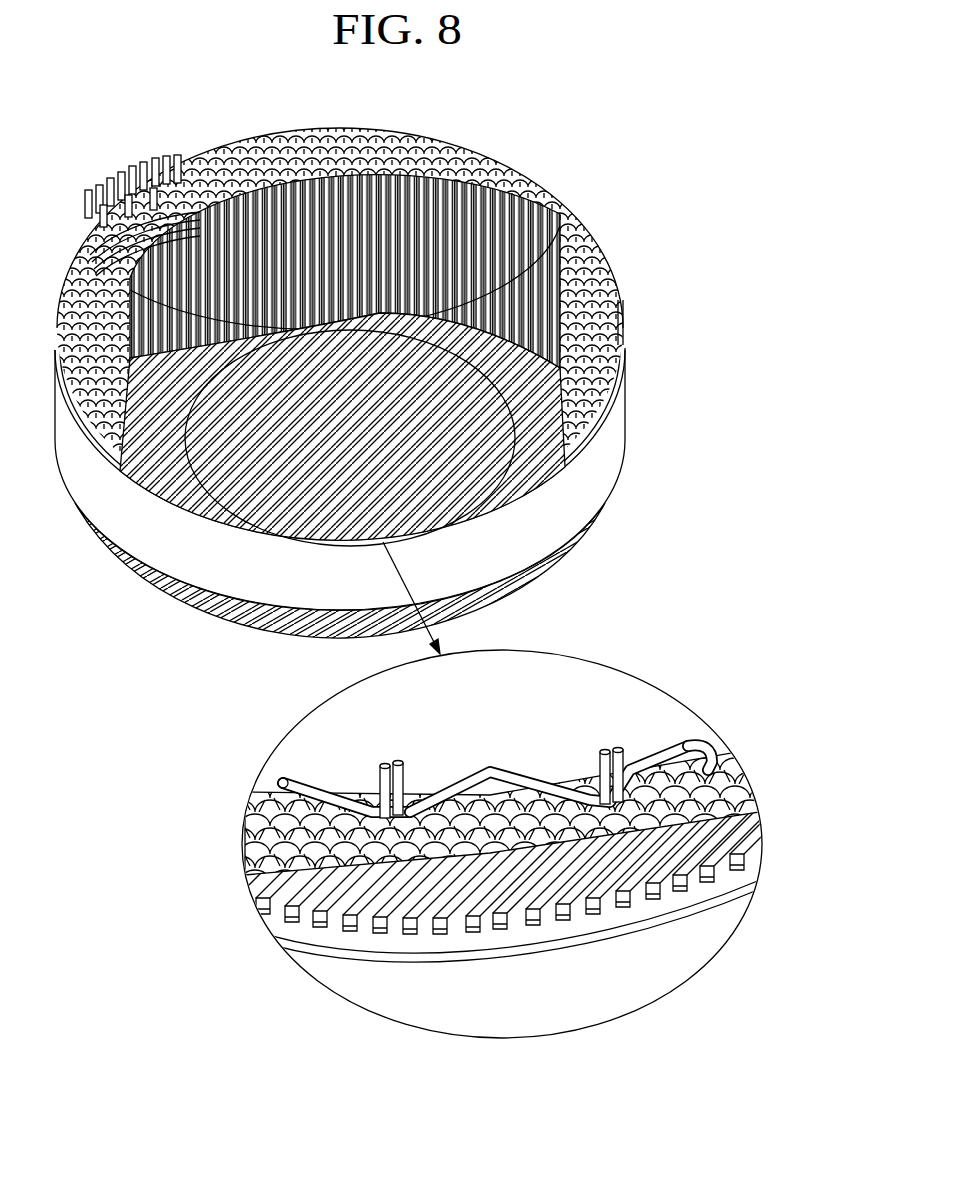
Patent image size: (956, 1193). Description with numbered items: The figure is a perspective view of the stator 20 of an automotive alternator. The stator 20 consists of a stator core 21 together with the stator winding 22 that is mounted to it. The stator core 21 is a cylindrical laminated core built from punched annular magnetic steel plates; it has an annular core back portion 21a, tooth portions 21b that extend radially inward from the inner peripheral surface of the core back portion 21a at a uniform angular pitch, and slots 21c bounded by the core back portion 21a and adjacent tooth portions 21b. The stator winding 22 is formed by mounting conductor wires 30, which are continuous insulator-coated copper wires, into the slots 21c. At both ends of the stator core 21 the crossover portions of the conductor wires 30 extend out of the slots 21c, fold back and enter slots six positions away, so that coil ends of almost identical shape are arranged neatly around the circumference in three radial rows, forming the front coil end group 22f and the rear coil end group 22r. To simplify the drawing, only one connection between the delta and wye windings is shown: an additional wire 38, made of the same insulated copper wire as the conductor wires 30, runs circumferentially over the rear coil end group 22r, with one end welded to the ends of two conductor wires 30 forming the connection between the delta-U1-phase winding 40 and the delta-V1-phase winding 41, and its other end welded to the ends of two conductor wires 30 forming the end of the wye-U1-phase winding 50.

The stator 20 is at (90, 96).
The stator core 21 is at (630, 390).
The core back portion 21a is at (733, 888).
The tooth portions 21b is at (667, 893).
The slots 21c is at (703, 893).
The stator winding 22 is at (382, 383).
The coil end group 22r is at (593, 228).
The coil end group 22f is at (597, 532).
The conductor wires 30 is at (280, 781).
The additional wire 38 is at (523, 790).
The delta-U1-phase winding 40 is at (690, 740).
The delta-V1-phase winding 41 is at (643, 750).
The wye-U1-phase winding 50 is at (312, 772).